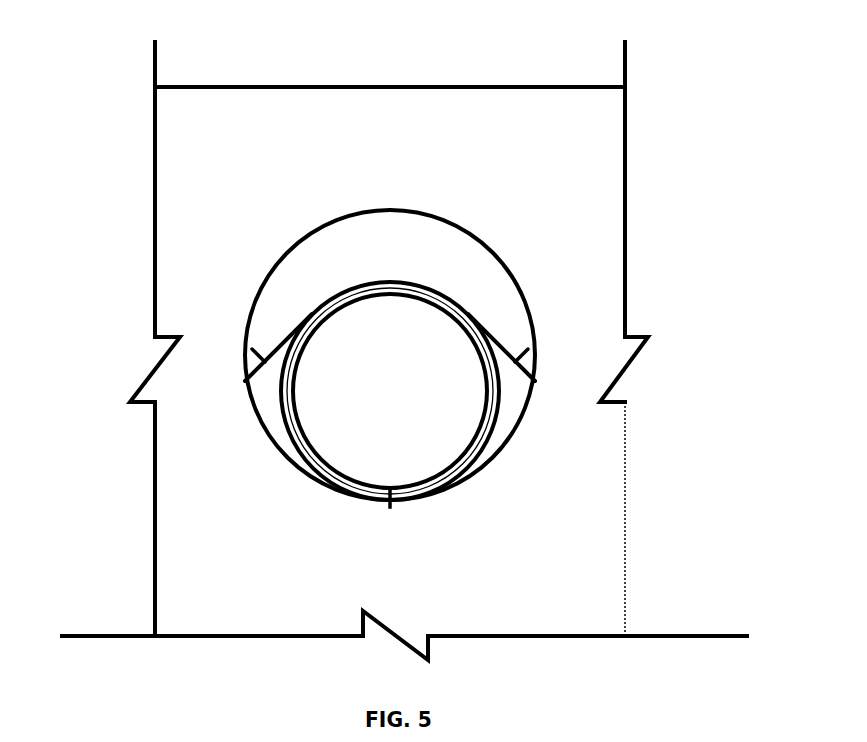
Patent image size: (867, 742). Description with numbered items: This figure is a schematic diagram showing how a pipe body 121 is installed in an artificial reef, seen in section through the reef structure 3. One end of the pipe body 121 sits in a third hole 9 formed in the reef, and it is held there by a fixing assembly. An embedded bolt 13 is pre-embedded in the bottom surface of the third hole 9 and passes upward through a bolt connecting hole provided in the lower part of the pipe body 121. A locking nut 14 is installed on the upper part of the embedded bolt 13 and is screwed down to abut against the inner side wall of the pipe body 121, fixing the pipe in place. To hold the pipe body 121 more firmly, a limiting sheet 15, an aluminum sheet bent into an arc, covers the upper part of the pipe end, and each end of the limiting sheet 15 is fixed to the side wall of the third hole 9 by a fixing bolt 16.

The housing 3 is at (558, 160).
The third hole 9 is at (485, 290).
The pipe body 121 is at (493, 397).
The locking nut 14 is at (393, 492).
The limiting sheet 15 is at (288, 340).
The fixing bolt 16 is at (243, 350).
The embedded bolt 13 is at (392, 506).